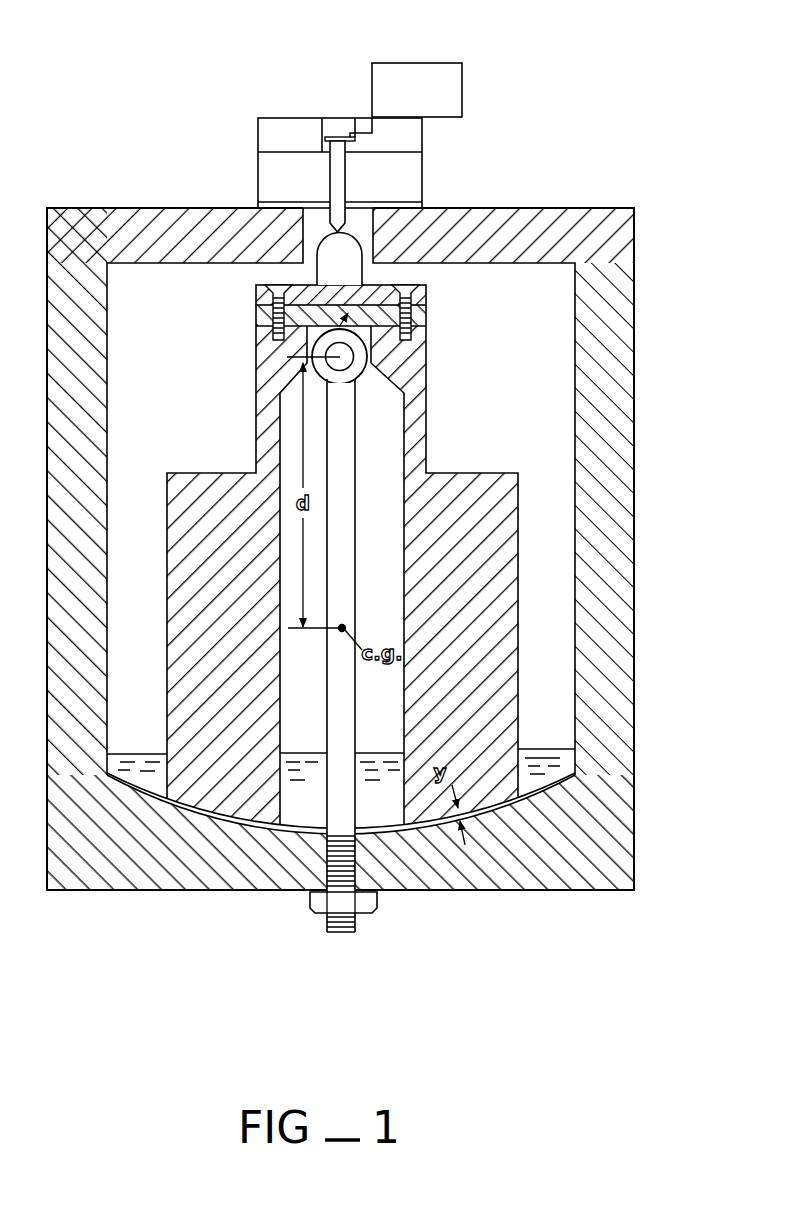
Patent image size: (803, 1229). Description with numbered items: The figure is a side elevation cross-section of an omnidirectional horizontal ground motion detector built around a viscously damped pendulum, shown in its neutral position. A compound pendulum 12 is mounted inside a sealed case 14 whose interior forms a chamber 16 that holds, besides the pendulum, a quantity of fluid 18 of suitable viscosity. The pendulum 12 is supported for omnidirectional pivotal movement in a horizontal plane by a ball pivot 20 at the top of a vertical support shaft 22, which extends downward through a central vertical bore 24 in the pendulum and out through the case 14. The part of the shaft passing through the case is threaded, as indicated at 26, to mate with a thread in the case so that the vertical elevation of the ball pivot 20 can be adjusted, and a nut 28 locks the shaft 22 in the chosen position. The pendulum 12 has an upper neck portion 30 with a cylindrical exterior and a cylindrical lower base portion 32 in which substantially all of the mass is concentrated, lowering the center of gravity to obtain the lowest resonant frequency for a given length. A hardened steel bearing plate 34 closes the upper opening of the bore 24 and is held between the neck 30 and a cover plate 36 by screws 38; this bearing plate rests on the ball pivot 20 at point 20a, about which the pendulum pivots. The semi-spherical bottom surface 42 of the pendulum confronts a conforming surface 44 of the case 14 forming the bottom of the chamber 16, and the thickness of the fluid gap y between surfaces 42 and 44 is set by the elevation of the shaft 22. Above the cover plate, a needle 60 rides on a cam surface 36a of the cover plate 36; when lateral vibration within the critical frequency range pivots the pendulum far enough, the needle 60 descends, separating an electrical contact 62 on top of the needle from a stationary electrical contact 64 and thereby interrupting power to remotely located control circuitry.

The compound pendulum 12 is at (203, 448).
The sealed case 14 is at (634, 430).
The chamber 16 is at (518, 438).
The fluid 18 is at (143, 753).
The ball pivot 20 is at (362, 374).
The point 20a is at (360, 284).
The vertical support shaft 22 is at (356, 517).
The central vertical bore 24 is at (282, 662).
The threaded portion 26 is at (390, 893).
The nut 28 is at (373, 915).
The upper neck portion 30 is at (427, 387).
The lower base portion 32 is at (520, 563).
The bearing plate 34 is at (426, 314).
The cover plate 36 is at (426, 293).
The cam surface 36a is at (366, 250).
The screws 38 is at (265, 285).
The bottom surface 42 is at (203, 812).
The conforming surface 44 is at (190, 814).
The needle 60 is at (347, 176).
The electrical contact 62 is at (332, 135).
The stationary electrical contact 64 is at (350, 135).